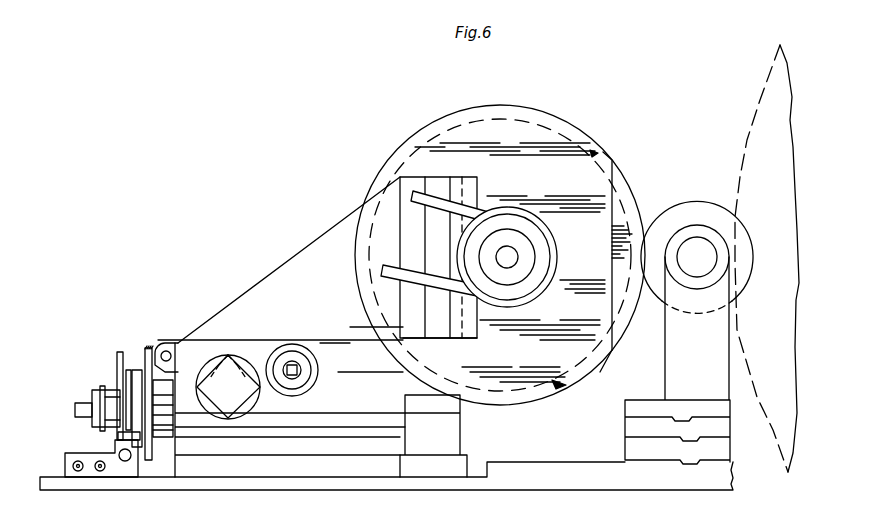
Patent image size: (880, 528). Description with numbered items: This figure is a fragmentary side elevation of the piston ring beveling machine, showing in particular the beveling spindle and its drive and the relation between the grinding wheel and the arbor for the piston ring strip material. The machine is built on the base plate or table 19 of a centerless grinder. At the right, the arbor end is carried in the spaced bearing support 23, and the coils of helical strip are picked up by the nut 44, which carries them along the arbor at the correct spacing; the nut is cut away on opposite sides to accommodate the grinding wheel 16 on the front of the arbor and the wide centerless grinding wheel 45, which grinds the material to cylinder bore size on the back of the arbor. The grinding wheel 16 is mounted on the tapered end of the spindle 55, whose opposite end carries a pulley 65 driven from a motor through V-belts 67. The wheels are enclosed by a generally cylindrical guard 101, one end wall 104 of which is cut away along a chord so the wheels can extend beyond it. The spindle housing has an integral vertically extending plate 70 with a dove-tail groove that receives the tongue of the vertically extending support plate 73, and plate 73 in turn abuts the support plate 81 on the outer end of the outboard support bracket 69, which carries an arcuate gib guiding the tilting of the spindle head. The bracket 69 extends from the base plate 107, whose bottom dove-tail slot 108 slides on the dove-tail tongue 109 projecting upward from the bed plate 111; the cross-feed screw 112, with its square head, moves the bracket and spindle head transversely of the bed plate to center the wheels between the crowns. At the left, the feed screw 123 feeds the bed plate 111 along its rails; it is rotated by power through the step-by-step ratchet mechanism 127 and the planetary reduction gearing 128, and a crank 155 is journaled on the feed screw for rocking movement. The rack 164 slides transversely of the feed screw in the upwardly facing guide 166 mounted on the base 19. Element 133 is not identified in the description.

The grinding wheel 16 is at (625, 193).
The base plate or table 19 is at (543, 462).
The bearing support 23 is at (662, 363).
The nut 44 is at (697, 201).
The wide centerless grinding wheel 45 is at (747, 140).
The spindle 55 is at (512, 256).
The pulley 65 is at (523, 283).
The V-belt 67 is at (434, 203).
The outboard support bracket 69 is at (352, 210).
The vertically extending plate 70 is at (460, 343).
The support plate 73 is at (437, 325).
The support plate 81 is at (412, 340).
The guard 101 is at (565, 121).
The end wall 104 is at (600, 372).
The base plate 107 is at (352, 330).
The dove-tail slot 108 is at (326, 360).
The dove-tail tongue 109 is at (338, 372).
The bed plate 111 is at (350, 393).
The cross-feed screw 112 is at (292, 365).
The feed screw 123 is at (83, 408).
The step-by-step ratchet mechanism 127 is at (137, 372).
The planetary reduction gearing 128 is at (160, 445).
The cam wheel 133 is at (210, 363).
The crank 155 is at (118, 368).
The rack 164 is at (127, 437).
The guide 166 is at (123, 447).